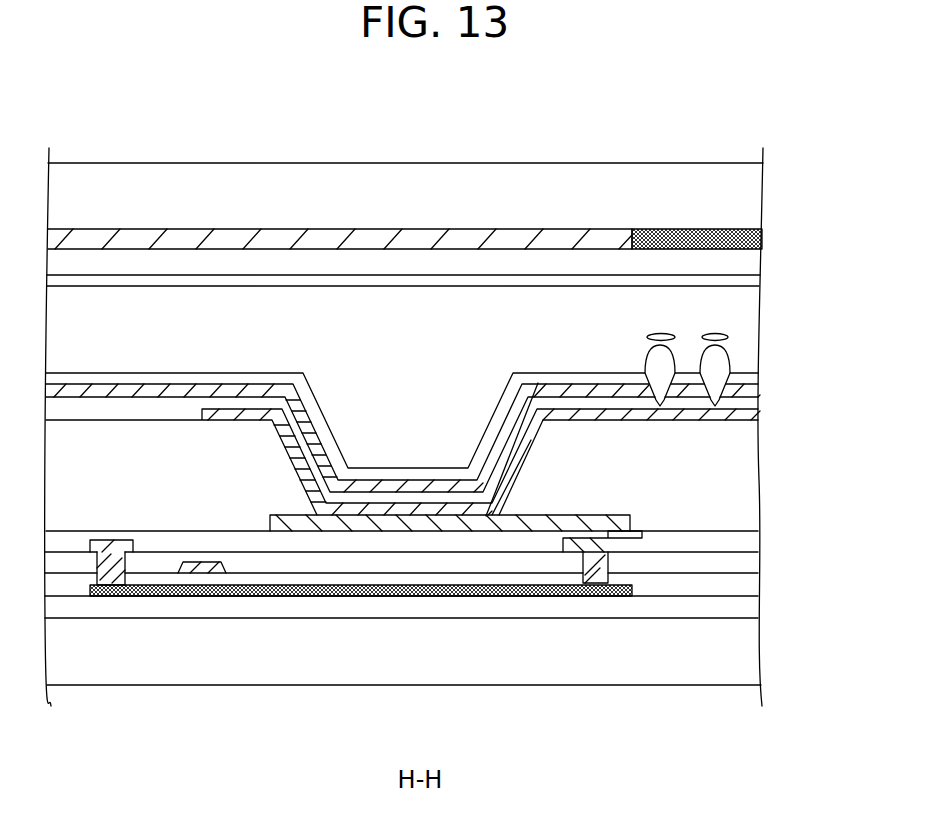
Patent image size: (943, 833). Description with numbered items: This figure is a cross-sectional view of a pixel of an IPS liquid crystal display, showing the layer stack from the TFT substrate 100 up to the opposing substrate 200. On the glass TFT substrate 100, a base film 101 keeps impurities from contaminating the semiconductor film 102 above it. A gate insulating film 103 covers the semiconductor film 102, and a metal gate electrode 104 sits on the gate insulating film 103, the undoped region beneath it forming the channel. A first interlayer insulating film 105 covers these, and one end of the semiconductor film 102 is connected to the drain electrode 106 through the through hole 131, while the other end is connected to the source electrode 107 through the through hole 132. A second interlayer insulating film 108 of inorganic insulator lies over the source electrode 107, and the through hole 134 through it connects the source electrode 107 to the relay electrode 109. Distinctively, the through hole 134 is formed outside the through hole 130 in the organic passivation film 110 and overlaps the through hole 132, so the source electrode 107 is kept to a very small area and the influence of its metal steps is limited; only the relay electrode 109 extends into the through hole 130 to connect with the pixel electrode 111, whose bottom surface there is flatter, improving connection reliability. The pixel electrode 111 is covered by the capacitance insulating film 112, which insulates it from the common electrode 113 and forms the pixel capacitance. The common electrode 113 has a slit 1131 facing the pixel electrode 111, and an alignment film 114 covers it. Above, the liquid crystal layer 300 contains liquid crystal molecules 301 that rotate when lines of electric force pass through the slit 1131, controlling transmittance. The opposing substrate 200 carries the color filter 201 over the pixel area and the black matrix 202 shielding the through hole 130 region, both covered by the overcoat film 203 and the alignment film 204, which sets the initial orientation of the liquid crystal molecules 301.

The TFT substrate 100 is at (750, 652).
The base film 101 is at (750, 606).
The semiconductor film 102 is at (360, 596).
The gate insulating film 103 is at (750, 584).
The gate electrode 104 is at (203, 573).
The first interlayer insulating film 105 is at (750, 563).
The drain electrode 106 is at (115, 540).
The source electrode 107 is at (595, 578).
The second interlayer insulating film 108 is at (750, 541).
The relay electrode 109 is at (565, 515).
The organic passivation film 110 is at (750, 470).
The pixel electrode 111 is at (750, 419).
The capacitance insulating film 112 is at (750, 398).
The common electrode 113 is at (583, 392).
The alignment film 114 is at (525, 373).
The through hole 130 is at (533, 447).
The through hole 131 is at (125, 563).
The through hole 132 is at (608, 560).
The through hole 134 is at (637, 537).
The slit 1131 is at (713, 412).
The opposing substrate 200 is at (750, 194).
The color filter 201 is at (692, 229).
The black matrix 202 is at (520, 229).
The overcoat film 203 is at (750, 258).
The alignment film 204 is at (422, 288).
The liquid crystal layer 300 is at (750, 325).
The liquid crystal molecules 301 is at (660, 333).